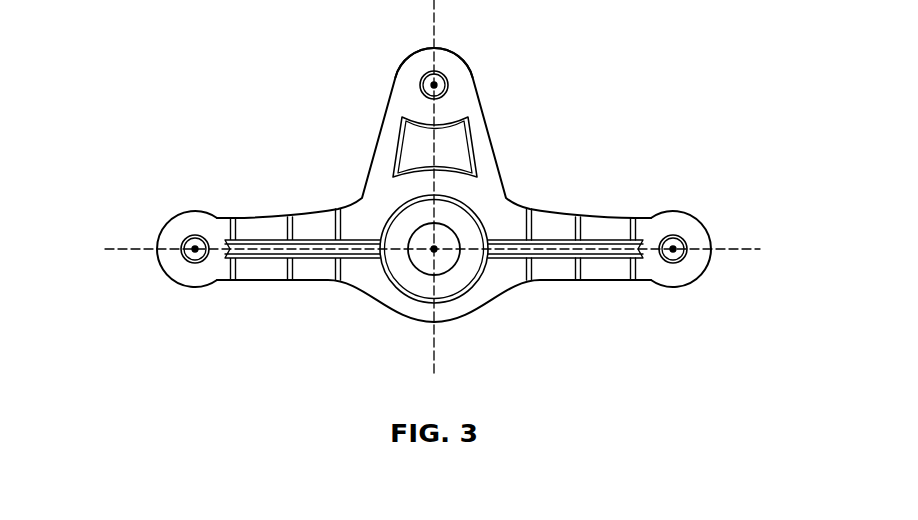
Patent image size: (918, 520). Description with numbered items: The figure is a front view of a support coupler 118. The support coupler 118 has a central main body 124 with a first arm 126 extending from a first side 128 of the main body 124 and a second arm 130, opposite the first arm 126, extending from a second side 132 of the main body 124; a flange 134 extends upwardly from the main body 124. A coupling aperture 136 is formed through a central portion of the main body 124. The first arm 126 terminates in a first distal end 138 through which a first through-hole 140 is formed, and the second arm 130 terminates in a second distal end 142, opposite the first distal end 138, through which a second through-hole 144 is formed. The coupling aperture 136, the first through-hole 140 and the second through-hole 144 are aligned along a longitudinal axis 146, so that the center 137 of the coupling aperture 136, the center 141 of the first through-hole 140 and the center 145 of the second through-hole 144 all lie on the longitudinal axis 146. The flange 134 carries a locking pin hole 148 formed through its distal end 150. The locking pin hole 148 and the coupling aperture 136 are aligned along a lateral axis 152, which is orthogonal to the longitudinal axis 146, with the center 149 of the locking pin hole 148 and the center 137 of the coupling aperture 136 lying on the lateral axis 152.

The support coupler 118 is at (186, 56).
The central main body 124 is at (377, 303).
The first arm 126 is at (270, 217).
The first side 128 is at (380, 226).
The second arm 130 is at (618, 217).
The second side 132 is at (500, 226).
The flange 134 is at (483, 110).
The coupling aperture 136 is at (436, 252).
The center of the coupling aperture 137 is at (436, 247).
The first distal end 138 is at (177, 276).
The first through-hole 140 is at (186, 256).
The center of the first through-hole 141 is at (193, 247).
The second distal end 142 is at (700, 280).
The second through-hole 144 is at (675, 247).
The center of the second through-hole 145 is at (671, 252).
The longitudinal axis 146 is at (737, 247).
The locking pin hole 148 is at (422, 80).
The center of the locking pin hole 149 is at (436, 84).
The distal end 150 is at (453, 54).
The lateral axis 152 is at (432, 350).